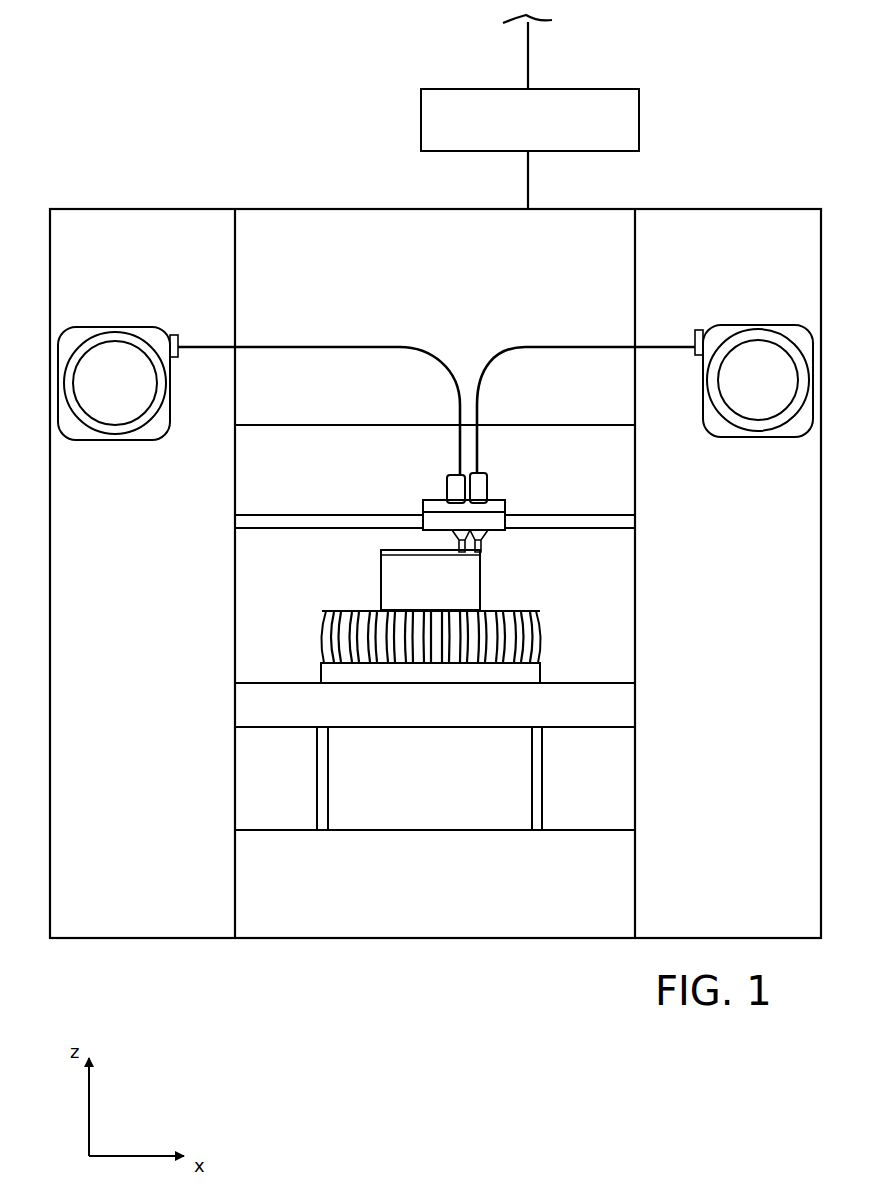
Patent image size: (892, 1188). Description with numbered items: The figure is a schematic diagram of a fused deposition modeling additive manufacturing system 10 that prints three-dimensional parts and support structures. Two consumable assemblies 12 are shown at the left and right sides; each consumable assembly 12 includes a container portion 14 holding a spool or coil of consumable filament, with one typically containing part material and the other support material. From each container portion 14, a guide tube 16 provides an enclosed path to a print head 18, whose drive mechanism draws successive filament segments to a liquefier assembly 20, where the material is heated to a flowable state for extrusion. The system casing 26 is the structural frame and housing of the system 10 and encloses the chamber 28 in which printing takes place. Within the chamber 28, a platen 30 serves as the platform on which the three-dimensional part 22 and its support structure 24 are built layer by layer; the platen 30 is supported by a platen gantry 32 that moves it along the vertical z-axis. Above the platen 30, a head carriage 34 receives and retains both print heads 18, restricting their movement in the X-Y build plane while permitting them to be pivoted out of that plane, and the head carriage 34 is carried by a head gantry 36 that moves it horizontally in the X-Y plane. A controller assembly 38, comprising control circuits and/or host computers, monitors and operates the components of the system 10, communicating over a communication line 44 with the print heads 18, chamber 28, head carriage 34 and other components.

The additive manufacturing system 10 is at (226, 96).
The consumable assembly 12 is at (160, 313).
The container portion 14 is at (163, 426).
The guide tube 16 is at (250, 347).
The print head 18 is at (436, 487).
The liquefier assembly 20 is at (458, 545).
The 3D part 22 is at (322, 622).
The support structure 24 is at (530, 677).
The system casing 26 is at (140, 208).
The chamber 28 is at (636, 606).
The platen 30 is at (627, 718).
The platen gantry 32 is at (554, 812).
The head carriage 34 is at (500, 508).
The head gantry 36 is at (300, 515).
The controller assembly 38 is at (530, 83).
The communication line 44 is at (529, 183).